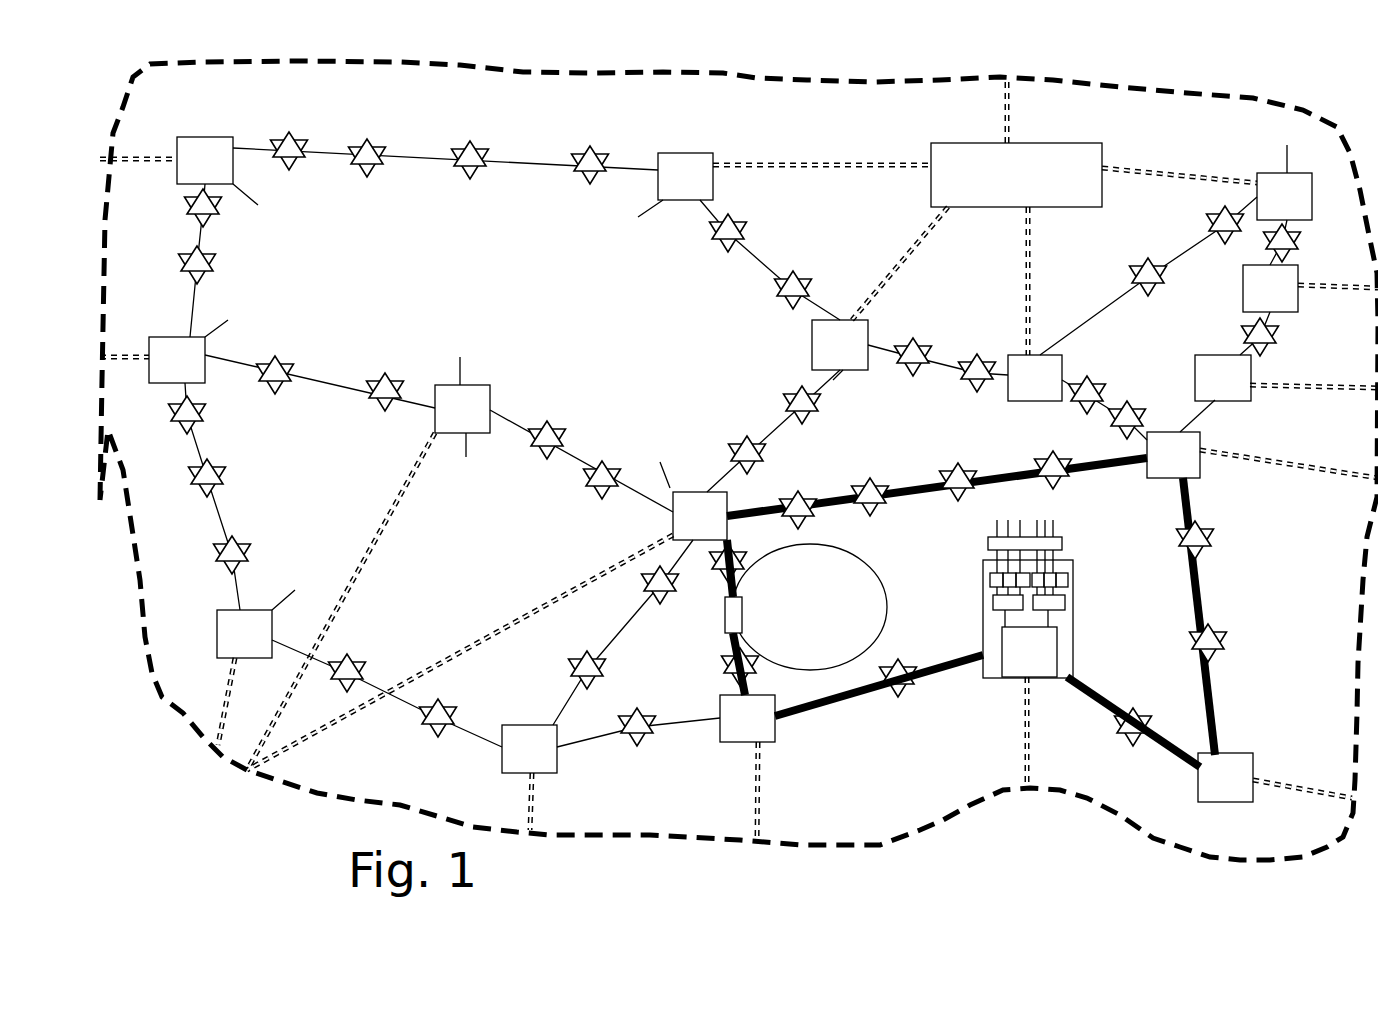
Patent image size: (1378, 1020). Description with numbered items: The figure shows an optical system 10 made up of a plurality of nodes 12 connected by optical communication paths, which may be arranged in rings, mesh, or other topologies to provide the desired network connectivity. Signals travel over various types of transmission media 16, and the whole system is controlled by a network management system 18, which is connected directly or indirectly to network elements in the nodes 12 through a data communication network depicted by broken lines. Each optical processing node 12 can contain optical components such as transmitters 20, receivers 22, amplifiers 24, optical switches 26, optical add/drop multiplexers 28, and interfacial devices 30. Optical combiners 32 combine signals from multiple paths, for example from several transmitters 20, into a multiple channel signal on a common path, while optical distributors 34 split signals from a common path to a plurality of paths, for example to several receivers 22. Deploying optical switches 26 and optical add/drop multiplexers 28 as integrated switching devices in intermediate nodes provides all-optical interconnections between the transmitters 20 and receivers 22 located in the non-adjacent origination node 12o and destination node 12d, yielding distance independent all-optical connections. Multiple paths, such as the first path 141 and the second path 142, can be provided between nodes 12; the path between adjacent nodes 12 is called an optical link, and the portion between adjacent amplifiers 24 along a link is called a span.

The optical system 10 is at (262, 803).
The node 12 is at (710, 150).
The destination node 12d is at (1200, 463).
The origination node 12o is at (1073, 660).
The first optical path 141 is at (1259, 652).
The second optical path 142 is at (868, 731).
The transmission media 16 is at (912, 485).
The network management system 18 is at (1102, 150).
The transmitter 20 is at (988, 578).
The receiver 22 is at (1068, 578).
The amplifier 24 is at (800, 280).
The optical switch 26 is at (1057, 650).
The optical add/drop multiplexer 28 is at (724, 620).
The interfacial device 30 is at (1062, 538).
The optical combiner 32 is at (990, 598).
The optical distributor 34 is at (1066, 603).